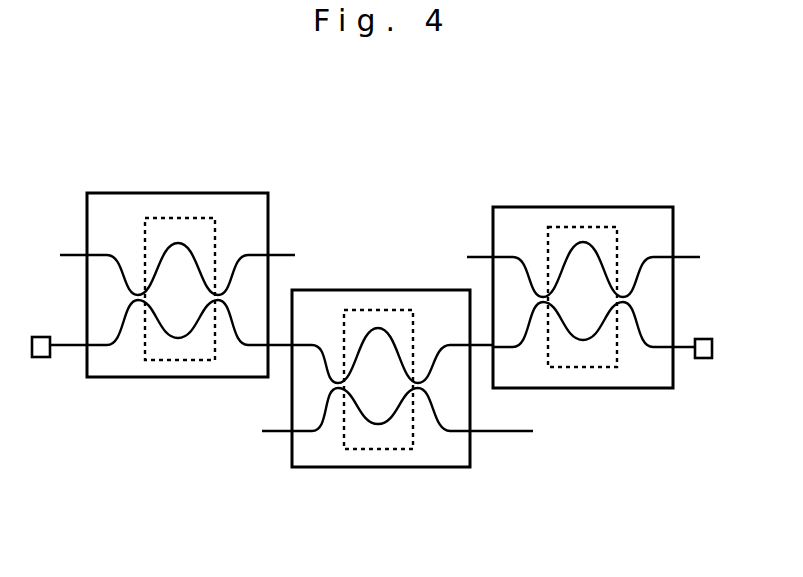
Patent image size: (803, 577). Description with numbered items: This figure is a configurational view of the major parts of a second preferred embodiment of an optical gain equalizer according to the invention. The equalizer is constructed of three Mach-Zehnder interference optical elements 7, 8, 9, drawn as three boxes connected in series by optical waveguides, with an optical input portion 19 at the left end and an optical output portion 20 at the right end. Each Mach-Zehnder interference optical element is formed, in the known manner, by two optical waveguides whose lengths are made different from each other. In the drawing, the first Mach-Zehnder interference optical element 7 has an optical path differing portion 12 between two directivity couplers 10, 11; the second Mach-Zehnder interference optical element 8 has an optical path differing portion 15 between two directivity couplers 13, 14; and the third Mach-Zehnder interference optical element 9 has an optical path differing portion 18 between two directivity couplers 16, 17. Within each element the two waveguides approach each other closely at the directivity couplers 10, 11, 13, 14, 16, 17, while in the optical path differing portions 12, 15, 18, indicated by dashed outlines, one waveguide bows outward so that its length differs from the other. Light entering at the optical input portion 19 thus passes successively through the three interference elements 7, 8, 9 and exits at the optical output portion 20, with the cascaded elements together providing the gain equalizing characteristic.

The Mach-Zehnder interference optical element 7 is at (193, 378).
The Mach-Zehnder interference optical element 8 is at (423, 468).
The Mach-Zehnder interference optical element 9 is at (615, 390).
The directivity coupler 10 is at (138, 290).
The directivity coupler 11 is at (225, 290).
The optical path differing portion 12 is at (185, 212).
The directivity coupler 13 is at (335, 380).
The directivity coupler 14 is at (420, 380).
The optical path differing portion 15 is at (380, 305).
The directivity coupler 16 is at (543, 293).
The directivity coupler 17 is at (626, 293).
The optical path differing portion 18 is at (588, 222).
The optical input portion 19 is at (42, 358).
The optical output portion 20 is at (708, 360).